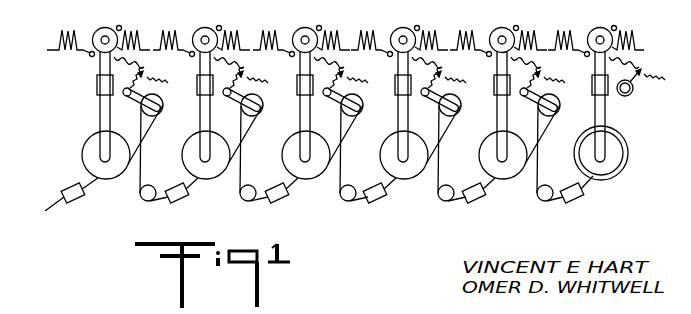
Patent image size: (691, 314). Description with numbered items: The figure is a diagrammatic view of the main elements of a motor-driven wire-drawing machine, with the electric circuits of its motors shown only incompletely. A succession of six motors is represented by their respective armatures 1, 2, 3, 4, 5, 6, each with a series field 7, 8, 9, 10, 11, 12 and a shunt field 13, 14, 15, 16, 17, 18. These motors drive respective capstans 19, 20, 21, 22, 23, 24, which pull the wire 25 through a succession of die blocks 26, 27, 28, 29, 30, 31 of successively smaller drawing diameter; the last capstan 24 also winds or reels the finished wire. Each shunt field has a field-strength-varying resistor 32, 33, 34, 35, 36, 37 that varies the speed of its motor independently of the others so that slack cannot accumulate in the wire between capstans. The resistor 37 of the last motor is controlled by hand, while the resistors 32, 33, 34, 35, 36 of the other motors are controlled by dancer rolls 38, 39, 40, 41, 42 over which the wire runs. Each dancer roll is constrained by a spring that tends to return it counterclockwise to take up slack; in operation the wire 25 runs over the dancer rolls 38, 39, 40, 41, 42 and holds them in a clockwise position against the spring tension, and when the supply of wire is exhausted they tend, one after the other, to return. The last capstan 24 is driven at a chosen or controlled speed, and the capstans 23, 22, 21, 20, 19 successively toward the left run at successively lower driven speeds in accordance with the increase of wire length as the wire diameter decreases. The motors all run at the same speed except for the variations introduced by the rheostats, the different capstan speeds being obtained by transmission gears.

The armature 1 is at (105, 84).
The armature 2 is at (206, 83).
The armature 3 is at (306, 83).
The armature 4 is at (404, 83).
The armature 5 is at (503, 82).
The armature 6 is at (601, 82).
The series field 7 is at (68, 30).
The series field 8 is at (171, 30).
The series field 9 is at (271, 30).
The series field 10 is at (369, 30).
The series field 11 is at (470, 28).
The series field 12 is at (568, 28).
The shunt field 13 is at (133, 28).
The shunt field 14 is at (236, 27).
The shunt field 15 is at (336, 28).
The shunt field 16 is at (438, 26).
The shunt field 17 is at (536, 26).
The shunt field 18 is at (637, 29).
The capstan 19 is at (108, 153).
The capstan 20 is at (211, 153).
The capstan 21 is at (312, 153).
The capstan 22 is at (409, 153).
The capstan 23 is at (505, 153).
The last capstan 24 is at (587, 157).
The wire 25 is at (52, 209).
The die block 26 is at (79, 201).
The die block 27 is at (182, 201).
The die block 28 is at (284, 201).
The die block 29 is at (382, 201).
The die block 30 is at (481, 201).
The die block 31 is at (580, 201).
The field-strength-varying resistor 32 is at (150, 72).
The field-strength-varying resistor 33 is at (250, 72).
The field-strength-varying resistor 34 is at (351, 72).
The field-strength-varying resistor 35 is at (450, 72).
The field-strength-varying resistor 36 is at (549, 72).
The field-strength-varying resistor 37 is at (645, 76).
The dancer roll 38 is at (165, 109).
The dancer roll 39 is at (266, 108).
The dancer roll 40 is at (366, 107).
The dancer roll 41 is at (463, 108).
The dancer roll 42 is at (565, 107).